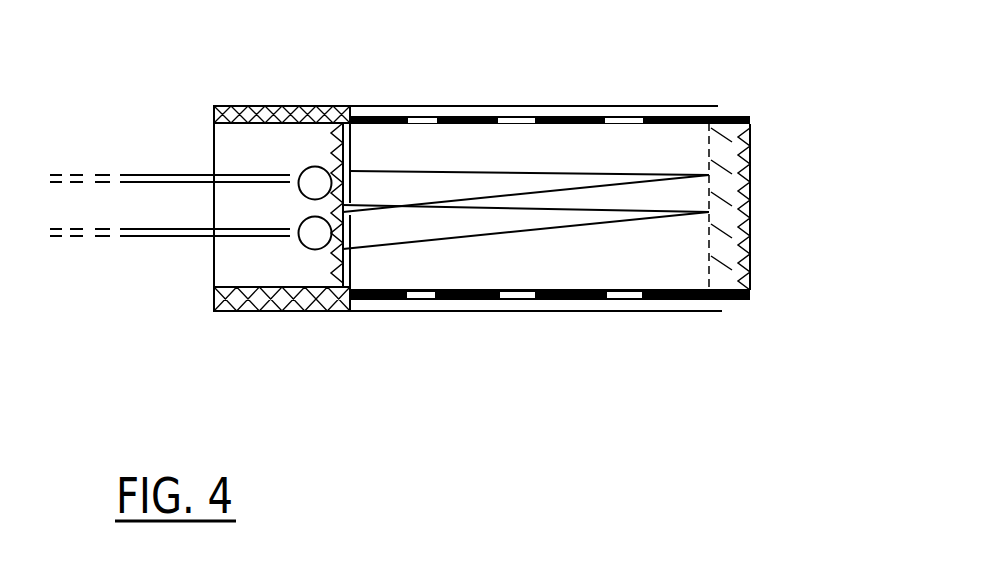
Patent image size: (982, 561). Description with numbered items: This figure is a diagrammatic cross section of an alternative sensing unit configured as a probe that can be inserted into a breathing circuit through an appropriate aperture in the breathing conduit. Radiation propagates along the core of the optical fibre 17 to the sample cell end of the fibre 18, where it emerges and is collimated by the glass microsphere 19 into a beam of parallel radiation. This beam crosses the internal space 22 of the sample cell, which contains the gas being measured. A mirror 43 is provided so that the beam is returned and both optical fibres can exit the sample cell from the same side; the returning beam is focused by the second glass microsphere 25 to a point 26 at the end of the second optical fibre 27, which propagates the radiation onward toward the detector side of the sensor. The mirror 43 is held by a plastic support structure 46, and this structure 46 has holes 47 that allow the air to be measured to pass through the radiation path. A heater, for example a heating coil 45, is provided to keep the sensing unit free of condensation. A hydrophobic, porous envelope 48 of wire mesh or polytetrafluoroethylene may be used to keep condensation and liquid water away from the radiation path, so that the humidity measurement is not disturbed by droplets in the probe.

The optical fibre 17 is at (150, 174).
The sample cell end of the fibre 18 is at (292, 170).
The glass microsphere 19 is at (317, 164).
The internal space of the sample cell 22 is at (383, 268).
The second glass microsphere 25 is at (313, 252).
The point at the end of a second optical fibre 26 is at (290, 242).
The second optical fibre 27 is at (158, 239).
The mirror 43 is at (695, 312).
The heating coil 45 is at (343, 128).
The plastic support structure 46 is at (746, 122).
The holes 47 is at (422, 118).
The hydrophobic, porous envelope 48 is at (690, 107).